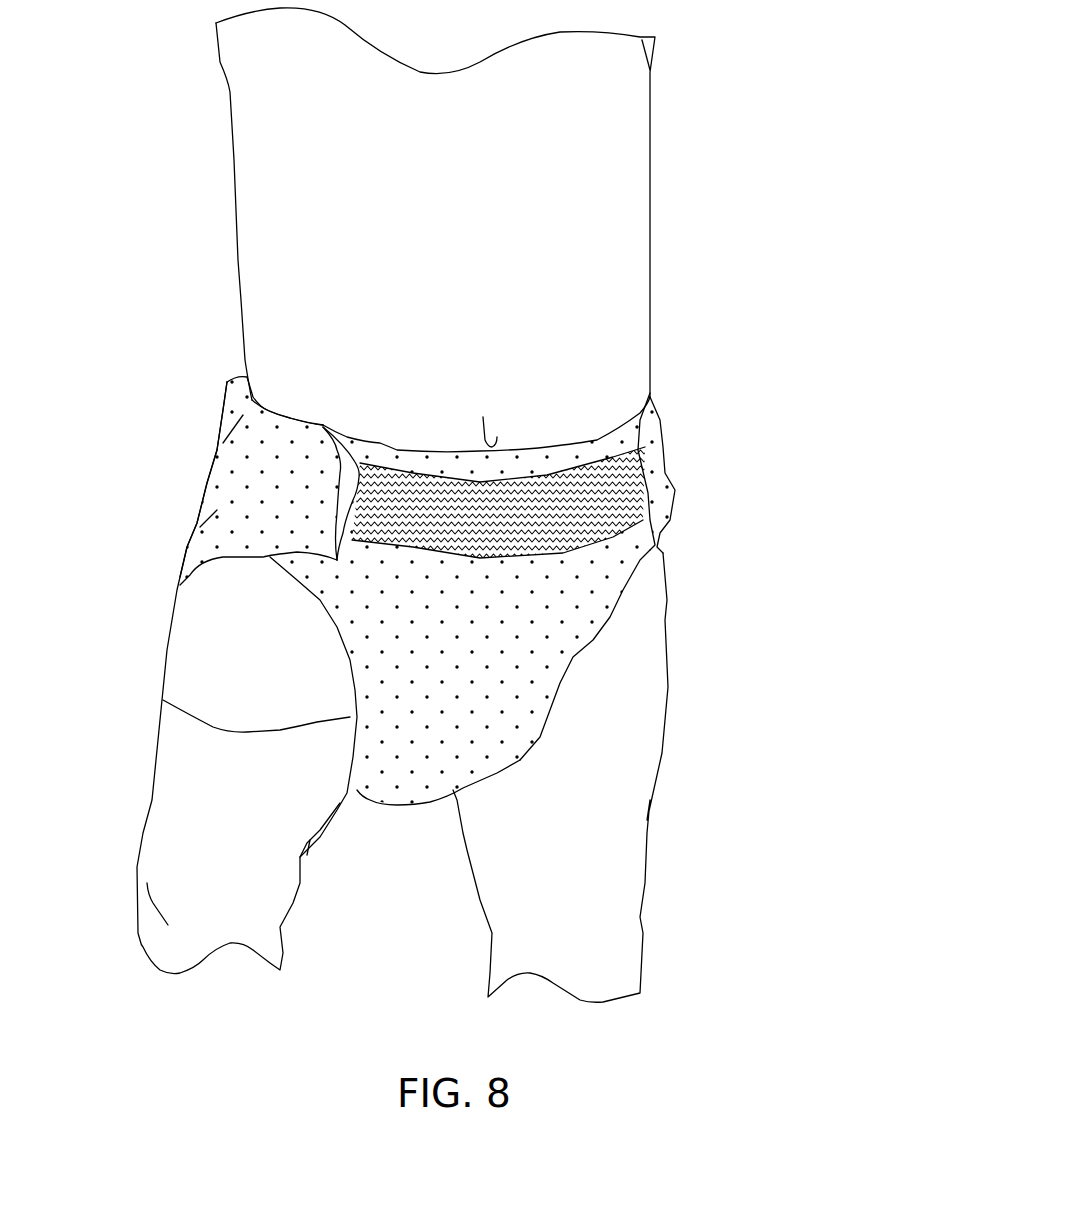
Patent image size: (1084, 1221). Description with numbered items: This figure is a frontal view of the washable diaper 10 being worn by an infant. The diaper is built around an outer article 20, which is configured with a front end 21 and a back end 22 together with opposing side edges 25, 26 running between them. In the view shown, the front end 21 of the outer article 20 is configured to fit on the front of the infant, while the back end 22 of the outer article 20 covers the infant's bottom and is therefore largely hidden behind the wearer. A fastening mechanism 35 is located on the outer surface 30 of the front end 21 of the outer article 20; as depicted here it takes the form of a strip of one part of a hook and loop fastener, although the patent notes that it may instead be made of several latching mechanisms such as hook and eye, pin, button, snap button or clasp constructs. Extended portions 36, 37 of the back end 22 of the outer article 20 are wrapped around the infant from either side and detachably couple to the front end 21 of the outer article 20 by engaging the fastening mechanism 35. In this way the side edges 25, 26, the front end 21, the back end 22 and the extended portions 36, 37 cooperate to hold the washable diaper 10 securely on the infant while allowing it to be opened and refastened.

The washable diaper 10 is at (715, 473).
The outer article 20 is at (390, 453).
The front end 21 is at (585, 443).
The back end 22 is at (227, 382).
The side edge 25 is at (587, 645).
The side edge 26 is at (163, 700).
The outer surface 30 is at (493, 667).
The fastening mechanism 35 is at (487, 513).
The extended portion 36 is at (653, 447).
The extended portion 37 is at (313, 492).